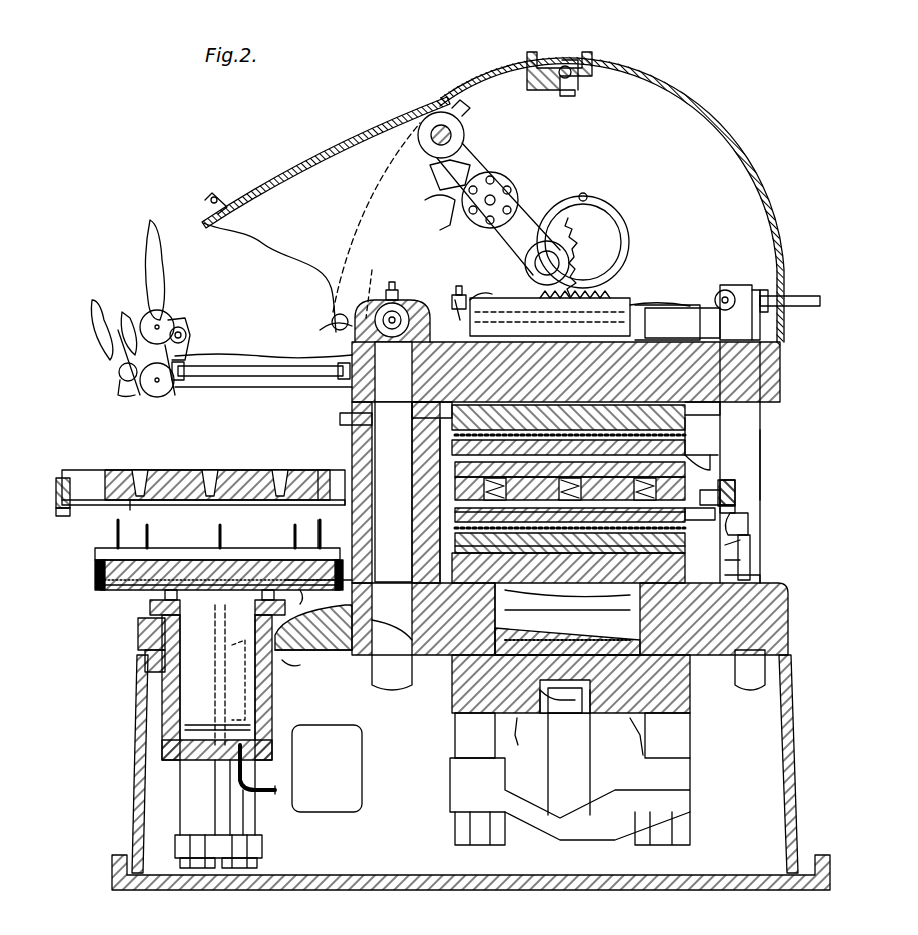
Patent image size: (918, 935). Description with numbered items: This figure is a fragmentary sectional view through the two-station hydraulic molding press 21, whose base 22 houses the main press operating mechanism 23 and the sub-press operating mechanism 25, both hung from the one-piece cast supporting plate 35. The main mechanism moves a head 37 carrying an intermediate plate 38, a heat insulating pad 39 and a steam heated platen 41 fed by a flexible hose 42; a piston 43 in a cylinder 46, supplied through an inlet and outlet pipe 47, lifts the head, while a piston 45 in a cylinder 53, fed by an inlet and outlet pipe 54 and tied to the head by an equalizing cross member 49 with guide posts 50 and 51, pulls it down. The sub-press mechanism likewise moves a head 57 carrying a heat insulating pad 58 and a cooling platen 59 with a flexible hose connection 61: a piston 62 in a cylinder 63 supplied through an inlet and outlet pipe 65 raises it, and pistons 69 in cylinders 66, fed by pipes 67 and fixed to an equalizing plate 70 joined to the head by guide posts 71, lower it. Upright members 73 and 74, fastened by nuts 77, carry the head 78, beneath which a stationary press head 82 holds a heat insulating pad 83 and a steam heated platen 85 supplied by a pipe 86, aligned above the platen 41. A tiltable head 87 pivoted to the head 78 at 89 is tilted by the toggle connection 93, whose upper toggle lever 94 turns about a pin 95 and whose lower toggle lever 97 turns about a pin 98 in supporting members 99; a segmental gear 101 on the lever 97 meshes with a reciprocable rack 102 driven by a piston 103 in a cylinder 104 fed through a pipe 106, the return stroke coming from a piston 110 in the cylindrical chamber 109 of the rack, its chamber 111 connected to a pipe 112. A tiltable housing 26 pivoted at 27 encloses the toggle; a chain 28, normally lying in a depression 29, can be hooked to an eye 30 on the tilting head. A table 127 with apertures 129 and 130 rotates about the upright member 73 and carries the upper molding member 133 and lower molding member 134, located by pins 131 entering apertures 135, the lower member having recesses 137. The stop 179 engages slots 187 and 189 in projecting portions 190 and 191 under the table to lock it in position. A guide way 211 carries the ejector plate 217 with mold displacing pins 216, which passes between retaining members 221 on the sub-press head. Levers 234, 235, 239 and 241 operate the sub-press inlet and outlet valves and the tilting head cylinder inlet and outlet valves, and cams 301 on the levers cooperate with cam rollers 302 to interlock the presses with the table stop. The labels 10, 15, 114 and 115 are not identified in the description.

The mold plates 10 is at (568, 479).
The reference line 15 is at (320, 464).
The two-station hydraulic molding press 21 is at (268, 150).
The base 22 is at (128, 730).
The main press operating mechanism 23 is at (700, 695).
The sub-press operating mechanism 25 is at (286, 690).
The tiltable housing 26 is at (670, 82).
The pivot 27 is at (325, 315).
The chain 28 is at (548, 52).
The depression 29 is at (585, 62).
The eye 30 is at (218, 192).
The supporting plate 35 is at (770, 628).
The head 37 is at (432, 596).
The intermediate plate 38 is at (455, 556).
The heat insulating pad 39 is at (455, 540).
The steam heated platen 41 is at (455, 512).
The flexible hose 42 is at (720, 520).
The piston 43 is at (530, 600).
The piston 45 is at (585, 788).
The cylinder 46 is at (632, 615).
The inlet and outlet pipe 47 is at (660, 742).
The equalizing cross member 49 is at (580, 848).
The guide post 50 is at (700, 752).
The guide post 51 is at (470, 742).
The cylinder 53 is at (560, 745).
The inlet and outlet pipe 54 is at (518, 740).
The head 57 is at (178, 575).
The heat insulating pad 58 is at (232, 565).
The cooling platen 59 is at (262, 568).
The flexible hose connection 61 is at (340, 650).
The piston 62 is at (190, 676).
The cylinder 63 is at (190, 700).
The inlet and outlet pipe 65 is at (268, 782).
The cylinders 66 is at (272, 707).
The pipes 67 is at (292, 662).
The pistons 69 is at (248, 826).
The equalizing plate 70 is at (262, 850).
The guide posts 71 is at (195, 806).
The upright member 73 is at (340, 419).
The upright member 74 is at (752, 404).
The nuts 77 is at (384, 355).
The head 78 is at (770, 378).
The stationary press head 82 is at (700, 410).
The heat insulating pad 83 is at (700, 432).
The steam heated platen 85 is at (372, 430).
The pipe 86 is at (698, 445).
The tiltable head 87 is at (330, 148).
The pivot 89 is at (376, 220).
The toggle connection 93 is at (546, 194).
The upper toggle lever 94 is at (470, 162).
The pin 95 is at (458, 132).
The lower toggle lever 97 is at (528, 215).
The pin 98 is at (548, 262).
The supporting members 99 is at (510, 300).
The segmental gear 101 is at (576, 262).
The reciprocable rack 102 is at (625, 296).
The piston 103 is at (726, 290).
The cylinder 104 is at (688, 300).
The pipe 106 is at (818, 306).
The cylindrical chamber 109 is at (622, 312).
The piston 110 is at (488, 290).
The chamber 111 is at (468, 288).
The pipe 112 is at (455, 296).
The pawl 114 is at (440, 172).
The pawl arm 115 is at (443, 212).
The table 127 is at (86, 486).
The aperture 129 is at (98, 470).
The aperture 130 is at (740, 492).
The pins 131 is at (415, 455).
The upper molding member 133 is at (740, 470).
The lower molding member 134 is at (705, 485).
The apertures 135 is at (146, 490).
The recesses 137 is at (128, 505).
The stop 179 is at (760, 545).
The slot 187 is at (62, 518).
The slot 189 is at (750, 528).
The projecting portion 190 is at (80, 498).
The projecting portion 191 is at (740, 508).
The guide way 211 is at (98, 585).
The mold displacing pins 216 is at (300, 516).
The ejector plate 217 is at (160, 552).
The retaining members 221 is at (440, 510).
The lever 234 is at (97, 300).
The lever 235 is at (150, 224).
The lever 239 is at (124, 312).
The lever 241 is at (120, 385).
The cams 301 is at (192, 322).
The cam rollers 302 is at (148, 388).